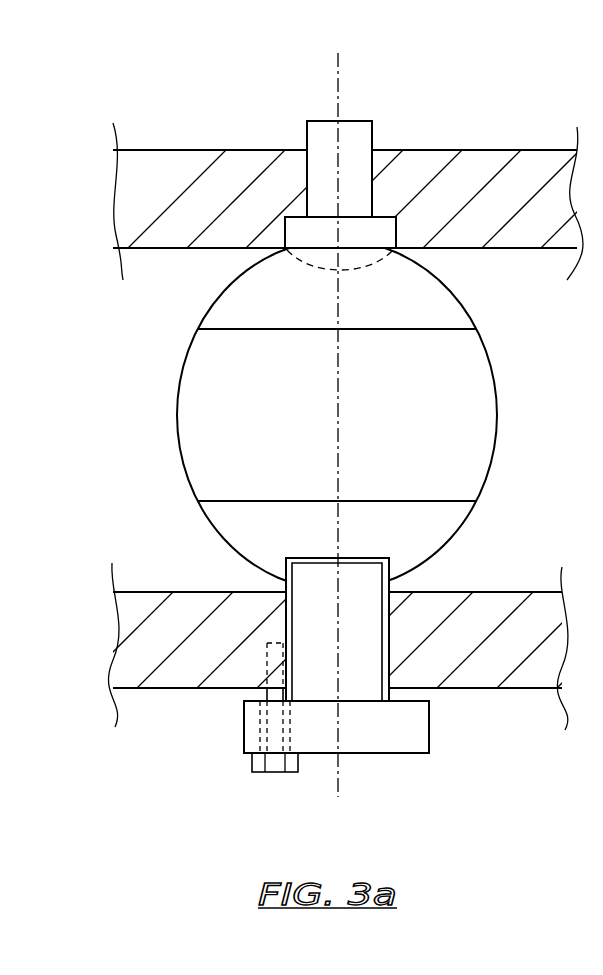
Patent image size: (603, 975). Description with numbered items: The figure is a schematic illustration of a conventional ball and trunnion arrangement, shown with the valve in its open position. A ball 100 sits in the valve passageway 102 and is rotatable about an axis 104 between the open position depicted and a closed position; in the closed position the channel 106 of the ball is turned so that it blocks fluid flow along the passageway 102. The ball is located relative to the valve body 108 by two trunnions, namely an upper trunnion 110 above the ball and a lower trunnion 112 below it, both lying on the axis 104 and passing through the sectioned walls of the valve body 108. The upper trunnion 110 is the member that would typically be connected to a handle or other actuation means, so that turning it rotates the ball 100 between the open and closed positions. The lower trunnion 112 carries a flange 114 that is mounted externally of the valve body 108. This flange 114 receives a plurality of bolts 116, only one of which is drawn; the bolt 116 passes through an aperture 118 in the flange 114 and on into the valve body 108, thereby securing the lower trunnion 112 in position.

The ball 100 is at (428, 320).
The valve passageway 102 is at (555, 423).
The axis 104 is at (342, 108).
The channel 106 is at (248, 480).
The valve body 108 is at (510, 217).
The upper trunnion 110 is at (367, 142).
The lower trunnion 112 is at (263, 730).
The flange 114 is at (375, 708).
The bolt 116 is at (278, 762).
The aperture 118 is at (292, 723).